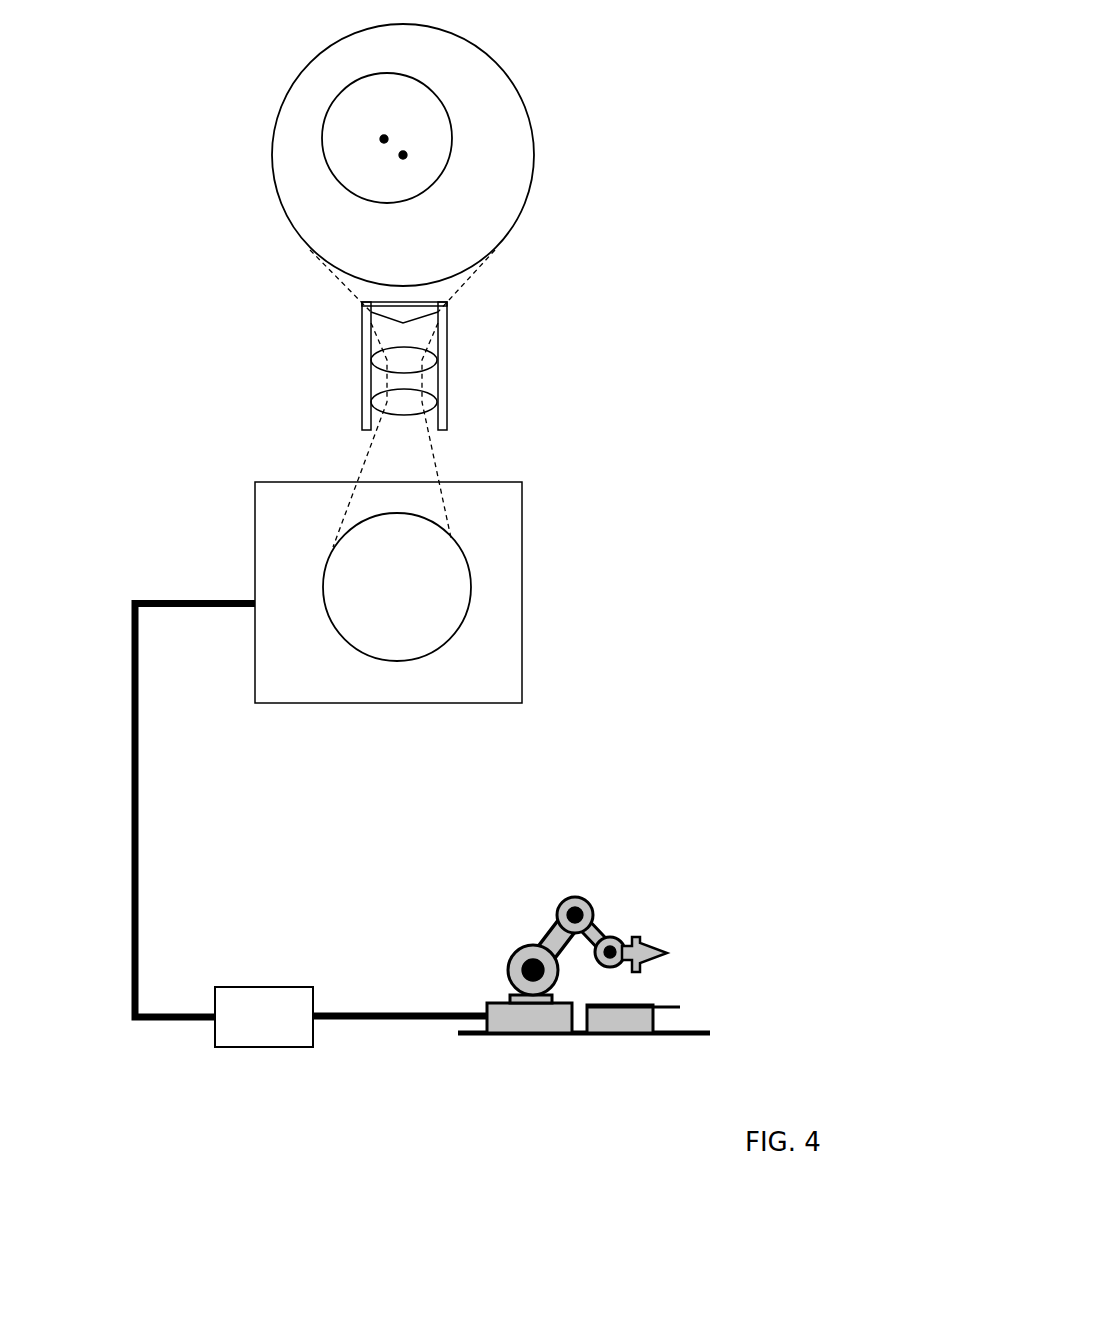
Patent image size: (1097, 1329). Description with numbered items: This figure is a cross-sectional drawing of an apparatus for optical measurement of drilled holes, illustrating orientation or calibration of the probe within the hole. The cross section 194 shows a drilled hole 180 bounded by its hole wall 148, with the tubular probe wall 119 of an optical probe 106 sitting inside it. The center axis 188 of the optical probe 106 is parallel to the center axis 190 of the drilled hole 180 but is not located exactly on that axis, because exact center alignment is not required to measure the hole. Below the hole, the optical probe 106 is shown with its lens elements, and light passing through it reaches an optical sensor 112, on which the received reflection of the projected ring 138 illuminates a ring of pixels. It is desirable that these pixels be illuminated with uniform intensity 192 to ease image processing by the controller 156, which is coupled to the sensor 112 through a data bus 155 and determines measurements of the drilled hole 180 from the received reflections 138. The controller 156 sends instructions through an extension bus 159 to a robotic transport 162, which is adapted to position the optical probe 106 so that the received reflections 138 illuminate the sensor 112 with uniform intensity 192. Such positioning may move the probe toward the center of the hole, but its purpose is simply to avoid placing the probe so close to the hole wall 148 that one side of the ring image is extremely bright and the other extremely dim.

The optical probe 106 is at (308, 368).
The sensor 112 is at (478, 626).
The probe wall 119 is at (328, 87).
The received reflection of projected ring 138 is at (511, 642).
The wall 148 is at (258, 156).
The data bus 155 is at (195, 811).
The controller 156 is at (264, 1017).
The extension bus 159 is at (401, 1000).
The robotic transport 162 is at (575, 958).
The drilled hole 180 is at (391, 207).
The center axis of the optical probe 188 is at (371, 132).
The center axis of the drilled hole 190 is at (415, 149).
The uniform intensity 192 is at (447, 660).
The cross section 194 is at (386, 155).